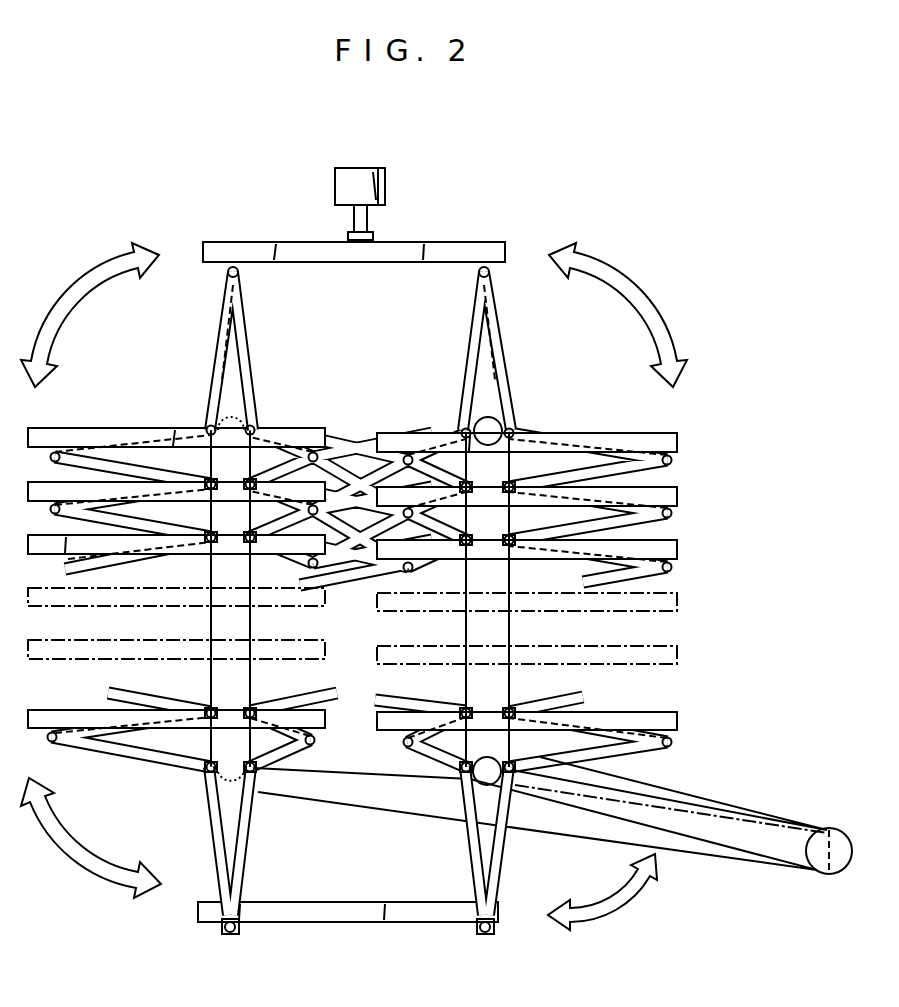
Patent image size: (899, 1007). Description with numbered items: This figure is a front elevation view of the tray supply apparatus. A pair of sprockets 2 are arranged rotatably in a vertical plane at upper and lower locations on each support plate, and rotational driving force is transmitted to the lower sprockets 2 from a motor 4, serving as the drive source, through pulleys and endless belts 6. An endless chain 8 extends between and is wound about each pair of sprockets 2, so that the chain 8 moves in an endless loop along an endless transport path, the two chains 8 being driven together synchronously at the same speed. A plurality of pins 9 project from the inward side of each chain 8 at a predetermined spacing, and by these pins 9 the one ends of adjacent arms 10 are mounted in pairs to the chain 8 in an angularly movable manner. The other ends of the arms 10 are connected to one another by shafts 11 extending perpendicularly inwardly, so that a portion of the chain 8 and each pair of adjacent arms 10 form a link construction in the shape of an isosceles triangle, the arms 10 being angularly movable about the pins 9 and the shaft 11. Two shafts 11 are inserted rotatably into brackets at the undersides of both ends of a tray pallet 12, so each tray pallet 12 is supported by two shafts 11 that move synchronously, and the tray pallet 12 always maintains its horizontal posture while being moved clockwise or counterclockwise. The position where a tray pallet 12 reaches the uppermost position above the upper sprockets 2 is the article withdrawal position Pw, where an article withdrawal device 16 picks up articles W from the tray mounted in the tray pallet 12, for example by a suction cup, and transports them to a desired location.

The sprocket 2 is at (209, 427).
The motor 4 is at (829, 871).
The endless belt 6 is at (731, 803).
The endless chain 8 is at (209, 628).
The pin 9 is at (518, 476).
The arm 10 is at (256, 372).
The shaft 11 is at (233, 266).
The tray pallet 12 is at (288, 250).
The article withdrawal device 16 is at (372, 168).
The article W is at (371, 233).
The article withdrawal position Pw is at (435, 220).